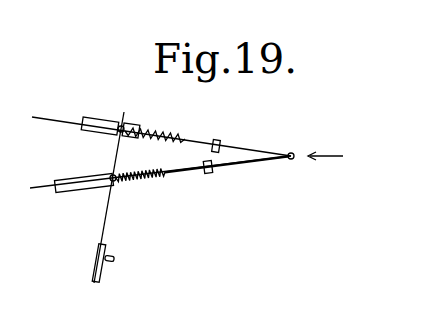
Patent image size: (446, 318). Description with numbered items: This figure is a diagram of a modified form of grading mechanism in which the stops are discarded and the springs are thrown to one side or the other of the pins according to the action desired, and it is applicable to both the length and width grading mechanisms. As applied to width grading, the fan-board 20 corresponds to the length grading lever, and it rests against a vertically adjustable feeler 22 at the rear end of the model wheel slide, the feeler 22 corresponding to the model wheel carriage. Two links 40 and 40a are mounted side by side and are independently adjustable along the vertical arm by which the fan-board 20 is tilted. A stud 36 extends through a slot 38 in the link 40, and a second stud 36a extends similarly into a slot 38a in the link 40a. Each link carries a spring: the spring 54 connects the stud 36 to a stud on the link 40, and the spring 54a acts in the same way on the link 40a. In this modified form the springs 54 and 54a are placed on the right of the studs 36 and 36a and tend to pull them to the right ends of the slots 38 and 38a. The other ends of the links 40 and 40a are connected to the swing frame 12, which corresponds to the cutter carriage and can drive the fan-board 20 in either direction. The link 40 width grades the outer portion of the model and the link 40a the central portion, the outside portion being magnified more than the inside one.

The swing frame 12 is at (294, 154).
The fan-board 20 is at (107, 225).
The feeler 22 is at (115, 260).
The stud 36 is at (123, 127).
The stud 36a is at (111, 176).
The slot 38 is at (91, 118).
The slot 38a is at (70, 183).
The link 40 is at (242, 148).
The link 40a is at (243, 162).
The spring 54 is at (152, 132).
The spring 54a is at (152, 178).